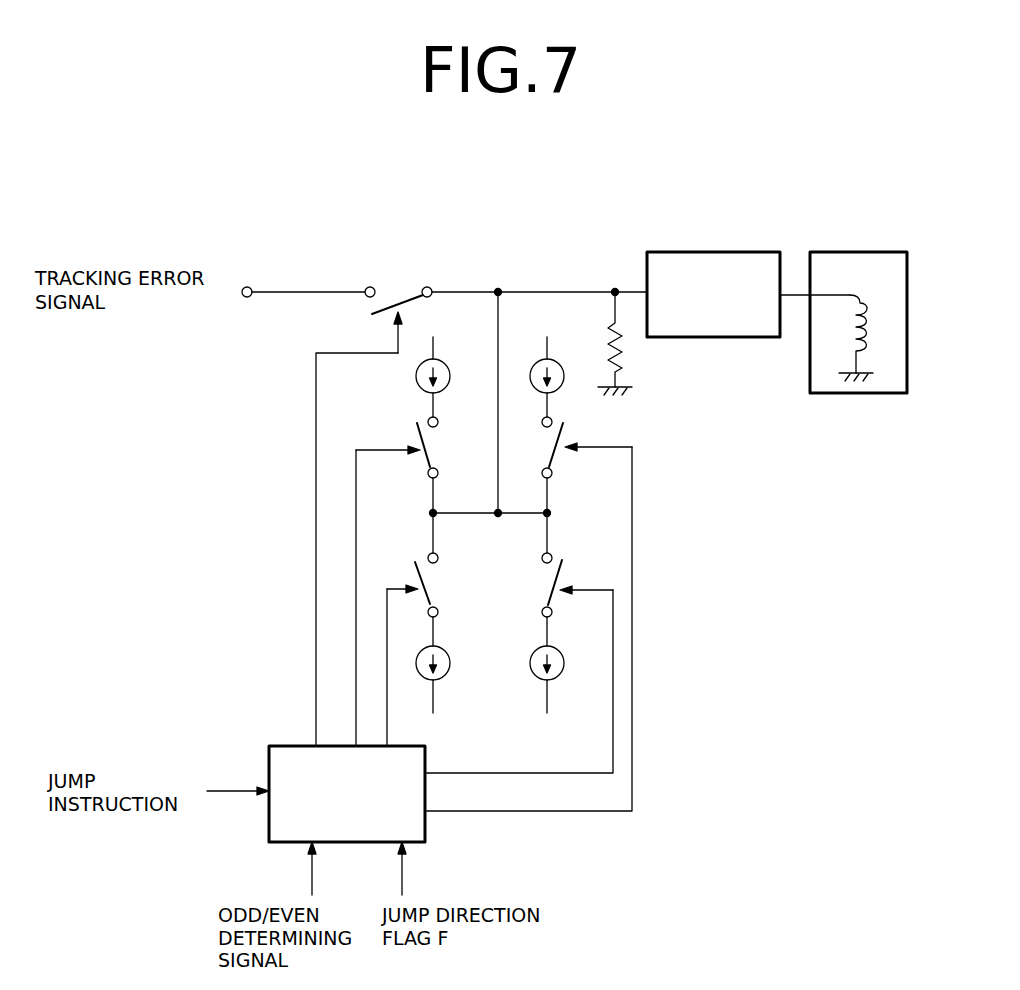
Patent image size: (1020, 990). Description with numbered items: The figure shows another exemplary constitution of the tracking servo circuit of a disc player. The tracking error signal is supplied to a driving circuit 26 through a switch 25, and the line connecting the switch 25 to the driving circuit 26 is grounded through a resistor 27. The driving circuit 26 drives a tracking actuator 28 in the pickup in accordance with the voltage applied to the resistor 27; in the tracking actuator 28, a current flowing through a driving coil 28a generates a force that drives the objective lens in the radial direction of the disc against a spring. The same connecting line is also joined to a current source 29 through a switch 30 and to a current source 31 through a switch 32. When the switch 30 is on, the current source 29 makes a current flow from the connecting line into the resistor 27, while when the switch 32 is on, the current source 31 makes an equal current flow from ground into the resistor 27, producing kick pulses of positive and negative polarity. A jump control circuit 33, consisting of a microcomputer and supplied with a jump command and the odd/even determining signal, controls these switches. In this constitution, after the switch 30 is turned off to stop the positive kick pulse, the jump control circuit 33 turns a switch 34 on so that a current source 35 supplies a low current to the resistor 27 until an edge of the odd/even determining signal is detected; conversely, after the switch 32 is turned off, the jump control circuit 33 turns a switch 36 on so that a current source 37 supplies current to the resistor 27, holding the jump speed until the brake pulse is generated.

The switch 25 is at (393, 297).
The driving circuit 26 is at (741, 252).
The resistor 27 is at (620, 347).
The tracking actuator 28 is at (822, 289).
The driving coil 28a is at (847, 332).
The current source 29 is at (447, 358).
The switch 30 is at (423, 453).
The current source 31 is at (452, 663).
The switch 32 is at (425, 586).
The jump control circuit 33 is at (292, 747).
The switch 34 is at (557, 453).
The current source 35 is at (560, 358).
The switch 36 is at (562, 575).
The current source 37 is at (553, 683).